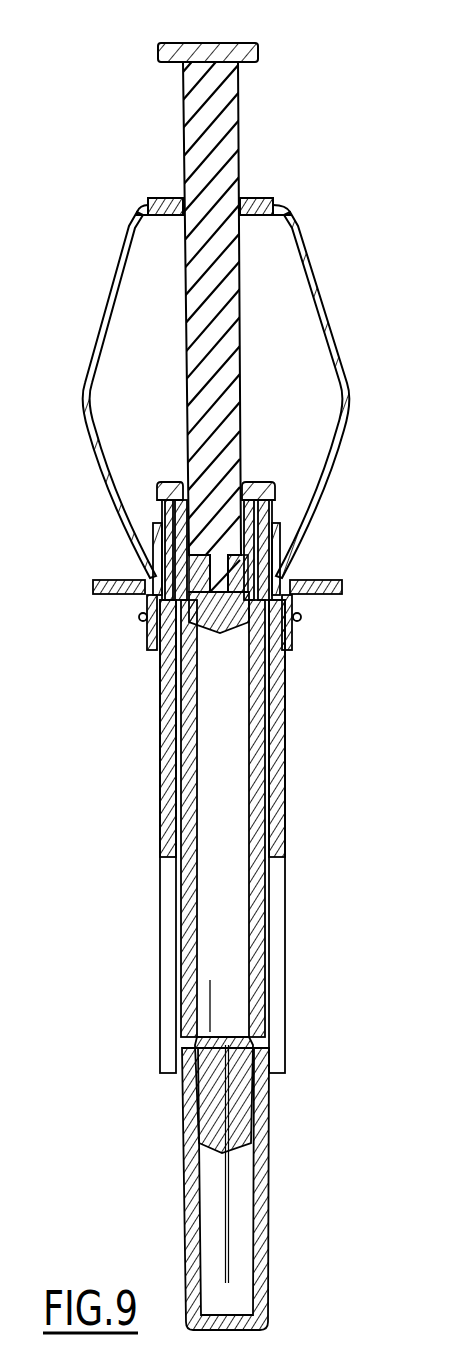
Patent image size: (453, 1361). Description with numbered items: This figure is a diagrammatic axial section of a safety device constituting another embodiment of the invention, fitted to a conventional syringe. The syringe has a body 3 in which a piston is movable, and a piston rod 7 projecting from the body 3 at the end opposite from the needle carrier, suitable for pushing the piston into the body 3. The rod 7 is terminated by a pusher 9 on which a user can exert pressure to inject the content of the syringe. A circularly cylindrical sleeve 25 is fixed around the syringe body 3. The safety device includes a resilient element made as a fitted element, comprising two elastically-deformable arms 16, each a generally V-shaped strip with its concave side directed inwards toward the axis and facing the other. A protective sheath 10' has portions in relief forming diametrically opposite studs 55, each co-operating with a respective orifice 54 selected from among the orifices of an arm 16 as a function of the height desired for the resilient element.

The pusher 9 is at (247, 44).
The piston rod 7 is at (218, 115).
The elastically-deformable arm 16 is at (89, 392).
The sleeve 25 is at (268, 832).
The orifice 54 is at (292, 598).
The stud 55 is at (147, 625).
The body 3 is at (260, 912).
The protective sheath 10' is at (276, 1173).